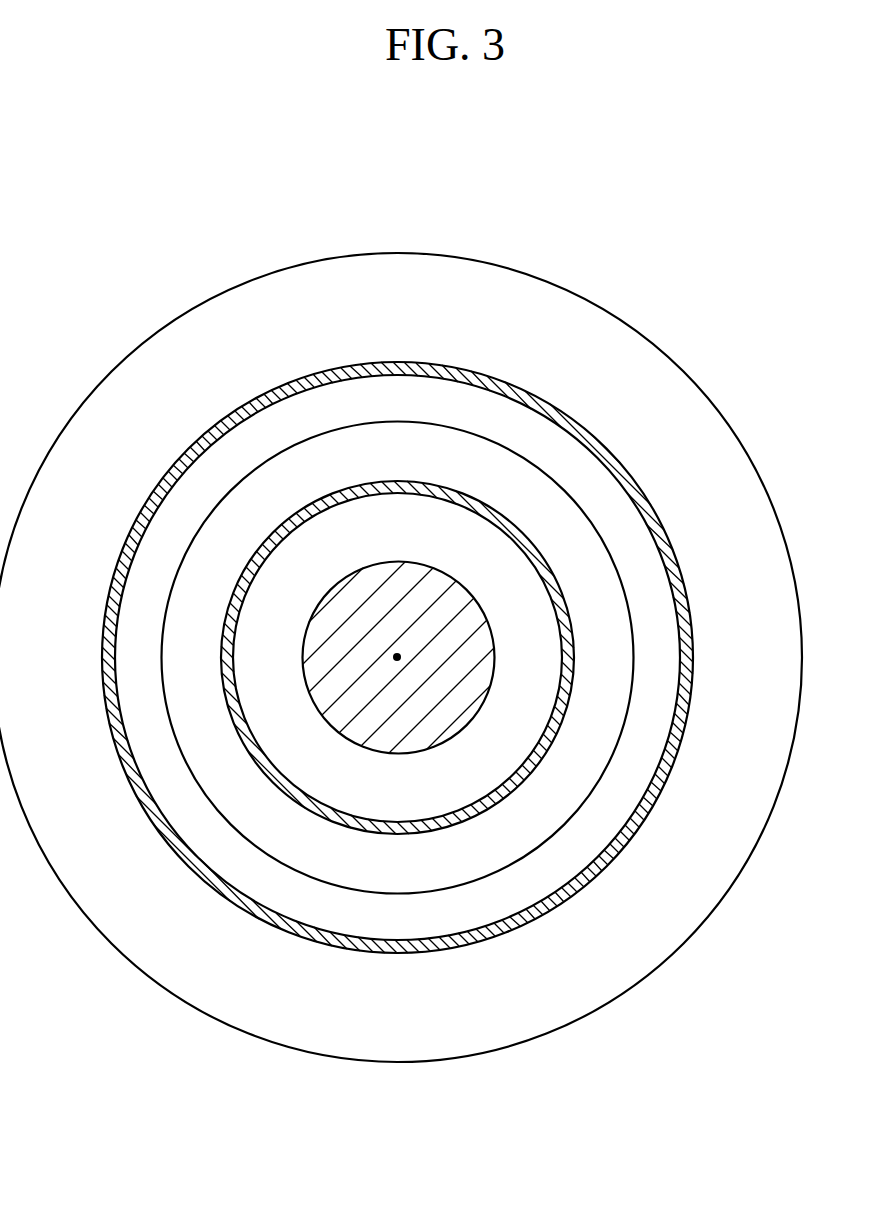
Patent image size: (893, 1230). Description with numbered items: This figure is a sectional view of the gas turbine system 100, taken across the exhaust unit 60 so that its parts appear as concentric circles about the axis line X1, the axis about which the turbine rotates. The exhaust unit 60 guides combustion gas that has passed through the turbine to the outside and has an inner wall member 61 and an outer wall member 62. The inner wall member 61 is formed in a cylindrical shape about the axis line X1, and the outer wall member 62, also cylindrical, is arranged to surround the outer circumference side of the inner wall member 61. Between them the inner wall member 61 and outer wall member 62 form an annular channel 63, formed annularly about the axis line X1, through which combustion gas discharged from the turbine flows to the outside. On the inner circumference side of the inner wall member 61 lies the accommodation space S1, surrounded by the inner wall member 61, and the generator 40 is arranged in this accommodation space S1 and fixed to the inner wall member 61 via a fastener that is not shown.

The gas sensor 100 is at (158, 178).
The exhaust unit 60 is at (115, 358).
The inner wall member 61 is at (324, 506).
The outer wall member 62 is at (497, 933).
The annular channel 63 is at (290, 928).
The generator 40 is at (463, 700).
The axis line X1 is at (393, 659).
The accommodation space S1 is at (410, 803).